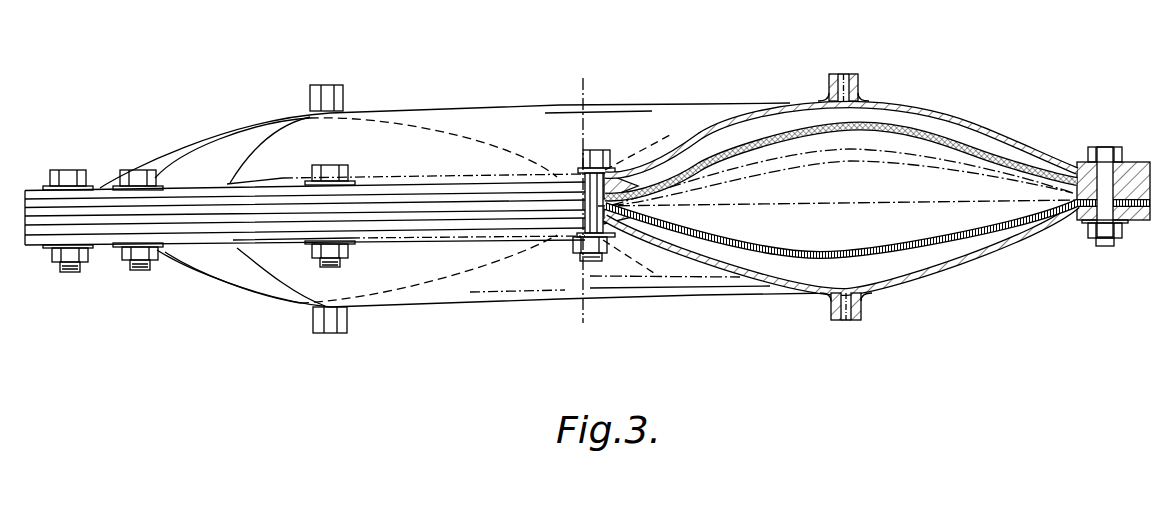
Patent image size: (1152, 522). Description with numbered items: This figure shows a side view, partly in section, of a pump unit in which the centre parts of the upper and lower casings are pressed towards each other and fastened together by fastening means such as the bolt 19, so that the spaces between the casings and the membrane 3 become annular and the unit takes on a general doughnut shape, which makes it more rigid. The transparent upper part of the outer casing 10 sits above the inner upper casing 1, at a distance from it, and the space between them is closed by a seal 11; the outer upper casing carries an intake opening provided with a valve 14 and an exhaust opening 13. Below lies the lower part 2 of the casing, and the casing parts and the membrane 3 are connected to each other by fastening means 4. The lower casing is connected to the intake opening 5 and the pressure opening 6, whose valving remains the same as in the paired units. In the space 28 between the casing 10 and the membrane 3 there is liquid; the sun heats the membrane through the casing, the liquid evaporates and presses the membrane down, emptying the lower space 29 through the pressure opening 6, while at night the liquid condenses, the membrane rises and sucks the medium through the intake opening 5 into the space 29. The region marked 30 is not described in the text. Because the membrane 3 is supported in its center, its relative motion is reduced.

The transparent casing 1 is at (970, 147).
The lower part of the casing 2 is at (958, 268).
The membrane 3 is at (1017, 225).
The fastening means 4 is at (1102, 147).
The intake opening 5 is at (330, 333).
The pressure opening 6 is at (846, 322).
The upper part of the outer casing 10 is at (898, 103).
The seal 11 is at (610, 184).
The exhaust opening 13 is at (328, 85).
The valve 14 is at (844, 74).
The bolt 19 is at (597, 157).
The space between the casing and the membrane 28 is at (841, 134).
The space between the membrane and the casing 29 is at (841, 271).
The shell layer 30 is at (841, 121).